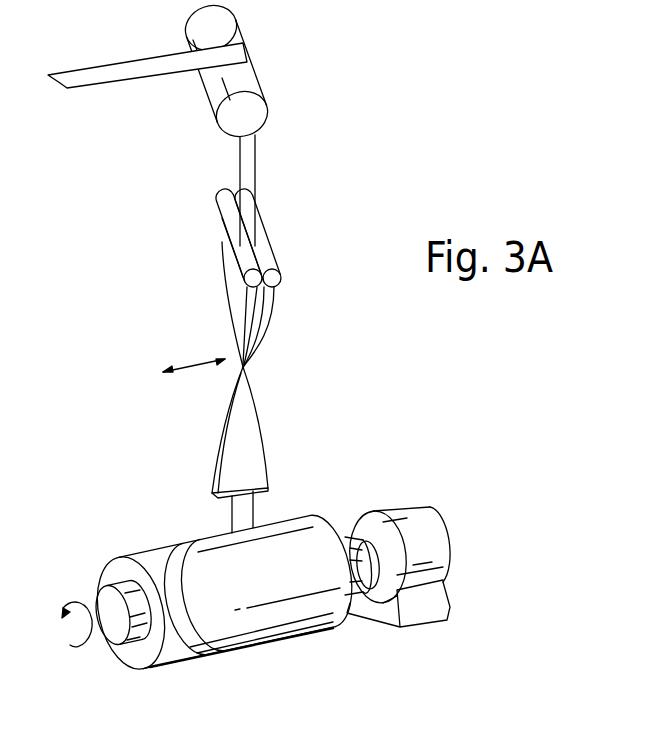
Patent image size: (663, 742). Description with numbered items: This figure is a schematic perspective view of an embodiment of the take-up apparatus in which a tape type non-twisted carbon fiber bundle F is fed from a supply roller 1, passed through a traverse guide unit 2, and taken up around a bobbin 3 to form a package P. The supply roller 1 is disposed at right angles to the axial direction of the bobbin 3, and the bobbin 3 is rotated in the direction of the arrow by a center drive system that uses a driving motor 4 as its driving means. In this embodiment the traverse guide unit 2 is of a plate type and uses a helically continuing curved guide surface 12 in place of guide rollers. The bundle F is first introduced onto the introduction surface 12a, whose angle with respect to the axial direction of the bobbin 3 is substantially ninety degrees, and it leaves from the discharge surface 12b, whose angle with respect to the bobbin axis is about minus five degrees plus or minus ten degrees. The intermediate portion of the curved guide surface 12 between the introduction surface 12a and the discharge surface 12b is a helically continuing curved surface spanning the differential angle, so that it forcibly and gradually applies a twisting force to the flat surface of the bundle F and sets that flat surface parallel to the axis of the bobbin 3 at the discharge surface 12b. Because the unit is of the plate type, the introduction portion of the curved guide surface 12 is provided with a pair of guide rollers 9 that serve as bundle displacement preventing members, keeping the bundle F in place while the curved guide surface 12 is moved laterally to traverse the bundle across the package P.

The tape type non-twisted carbon fiber bundle F is at (128, 68).
The supply roller 1 is at (210, 92).
The guide rollers 9 is at (267, 262).
The curved guide surface 12 is at (230, 310).
The introduction surface 12a is at (227, 257).
The discharge surface 12b is at (212, 482).
The traverse guide unit 2 is at (280, 388).
The bobbin 3 is at (106, 601).
The package P is at (273, 647).
The driving motor 4 is at (410, 512).